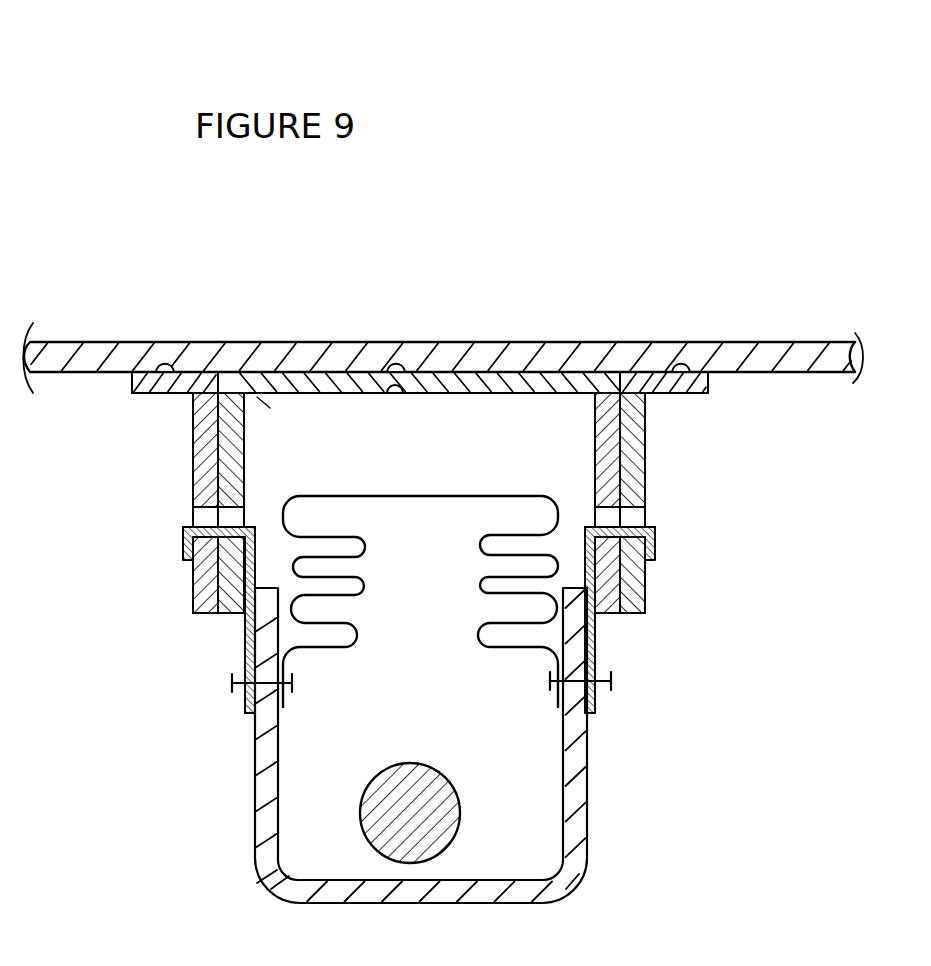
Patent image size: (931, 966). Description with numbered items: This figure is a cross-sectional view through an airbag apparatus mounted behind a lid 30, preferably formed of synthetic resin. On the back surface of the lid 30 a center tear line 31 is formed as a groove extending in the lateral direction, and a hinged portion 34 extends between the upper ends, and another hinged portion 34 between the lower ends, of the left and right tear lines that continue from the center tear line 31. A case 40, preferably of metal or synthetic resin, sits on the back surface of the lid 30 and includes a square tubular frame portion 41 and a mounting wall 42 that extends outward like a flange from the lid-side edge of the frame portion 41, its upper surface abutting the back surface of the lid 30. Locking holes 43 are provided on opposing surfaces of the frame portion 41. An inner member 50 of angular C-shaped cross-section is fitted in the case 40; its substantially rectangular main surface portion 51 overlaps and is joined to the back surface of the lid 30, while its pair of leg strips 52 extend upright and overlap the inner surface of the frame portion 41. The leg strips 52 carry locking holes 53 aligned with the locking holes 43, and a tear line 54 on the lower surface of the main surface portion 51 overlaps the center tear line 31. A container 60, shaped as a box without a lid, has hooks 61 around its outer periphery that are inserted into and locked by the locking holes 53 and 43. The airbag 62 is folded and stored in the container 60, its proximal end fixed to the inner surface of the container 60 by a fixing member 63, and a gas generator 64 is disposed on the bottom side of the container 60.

The lid 30 is at (280, 340).
The center tear line 31 is at (396, 340).
The hinged portion 34 is at (165, 340).
The case 40 is at (450, 422).
The frame portion 41 is at (193, 453).
The mounting wall 42 is at (675, 396).
The locking hole 43 is at (196, 515).
The inner member 50 is at (522, 410).
The main surface portion 51 is at (285, 398).
The leg strip 52 is at (232, 606).
The locking hole 53 is at (255, 513).
The tear line 54 is at (397, 395).
The container 60 is at (588, 826).
The hook 61 is at (184, 547).
The airbag 62 is at (407, 498).
The fixing member 63 is at (295, 693).
The gas generator 64 is at (385, 770).